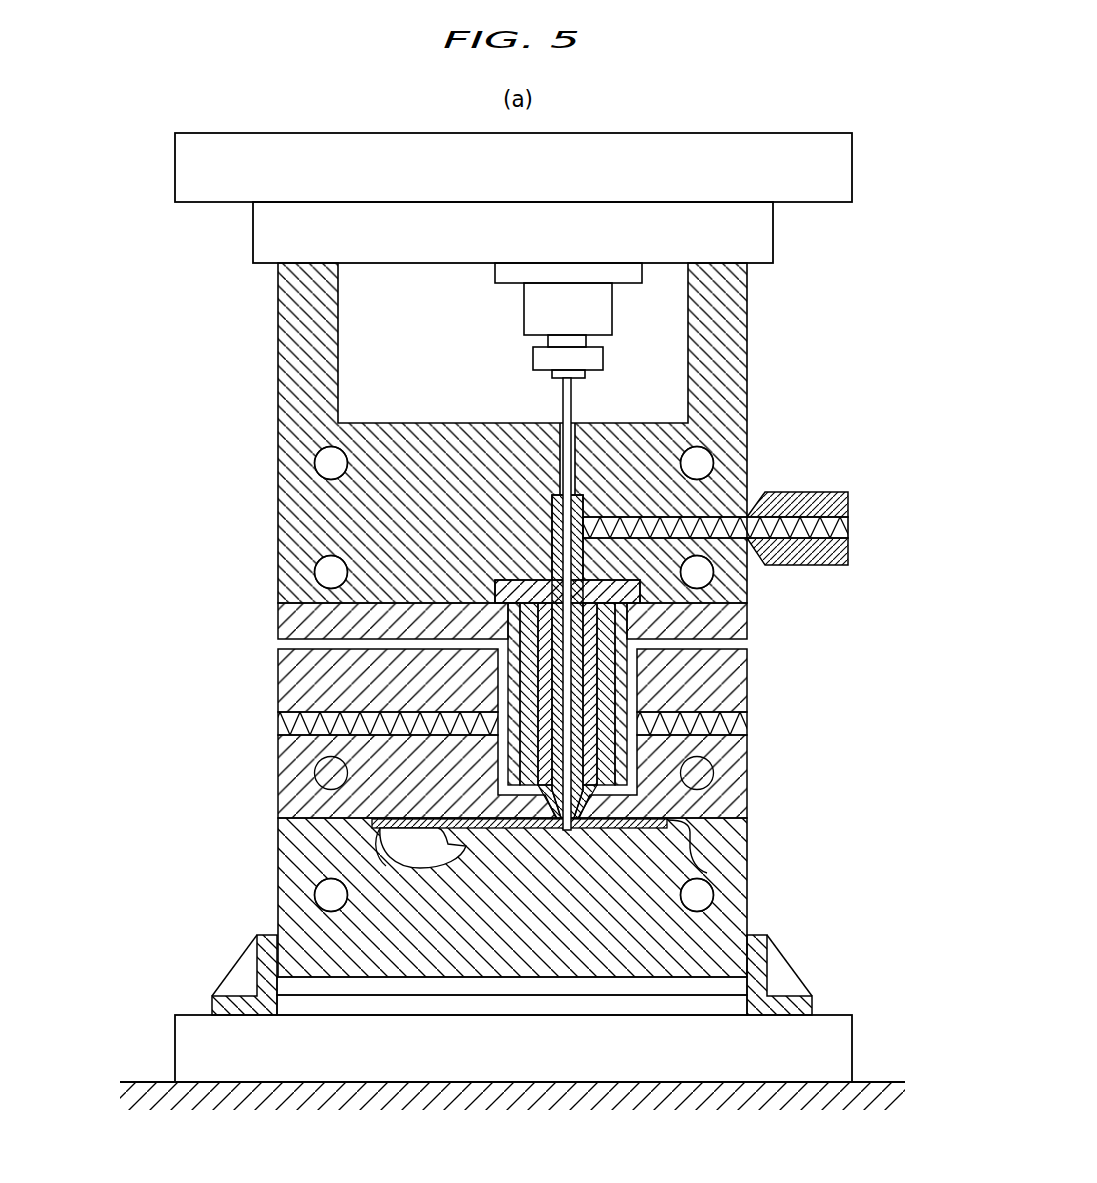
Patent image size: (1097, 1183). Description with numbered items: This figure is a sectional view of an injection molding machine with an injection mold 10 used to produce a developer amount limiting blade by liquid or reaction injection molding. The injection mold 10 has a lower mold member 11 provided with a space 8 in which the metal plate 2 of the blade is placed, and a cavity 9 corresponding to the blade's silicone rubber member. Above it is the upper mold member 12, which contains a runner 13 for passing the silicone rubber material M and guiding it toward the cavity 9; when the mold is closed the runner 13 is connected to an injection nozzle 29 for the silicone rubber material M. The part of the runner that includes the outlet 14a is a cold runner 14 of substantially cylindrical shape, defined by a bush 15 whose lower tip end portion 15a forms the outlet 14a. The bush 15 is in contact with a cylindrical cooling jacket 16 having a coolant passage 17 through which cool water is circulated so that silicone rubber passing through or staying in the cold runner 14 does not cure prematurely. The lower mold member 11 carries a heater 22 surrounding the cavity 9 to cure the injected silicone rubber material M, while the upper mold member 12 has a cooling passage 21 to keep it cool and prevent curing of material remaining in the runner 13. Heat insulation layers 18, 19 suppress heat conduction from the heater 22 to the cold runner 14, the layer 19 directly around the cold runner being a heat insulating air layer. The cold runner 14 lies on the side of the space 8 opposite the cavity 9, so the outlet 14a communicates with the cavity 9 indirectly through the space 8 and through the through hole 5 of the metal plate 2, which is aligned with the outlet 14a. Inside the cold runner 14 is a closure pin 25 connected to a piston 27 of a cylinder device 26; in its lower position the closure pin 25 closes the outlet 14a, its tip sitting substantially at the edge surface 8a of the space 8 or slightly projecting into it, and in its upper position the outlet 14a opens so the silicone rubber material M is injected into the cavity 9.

The metal plate 2 is at (423, 828).
The through hole 5 is at (547, 832).
The space 8 is at (408, 845).
The edge surface 8a is at (707, 873).
The cavity 9 is at (383, 843).
The injection mold 10 is at (243, 600).
The lower mold member 11 is at (720, 846).
The upper mold member 12 is at (720, 383).
The runner 13 is at (695, 515).
The cold runner 14 is at (577, 624).
The outlet 14a is at (570, 832).
The bush 15 is at (497, 583).
The lower tip end portion 15a is at (585, 808).
The cooling jacket 16 is at (552, 688).
The coolant passage 17 is at (520, 665).
The heat insulation layer 18 is at (297, 725).
The heat insulation layer 19 is at (497, 792).
The cooling passage 21 is at (327, 462).
The heater 22 is at (322, 772).
The closure pin 25 is at (570, 682).
The cylinder device 26 is at (590, 305).
The piston 27 is at (590, 338).
The injection nozzle 29 is at (800, 500).
The silicone rubber material M is at (707, 533).